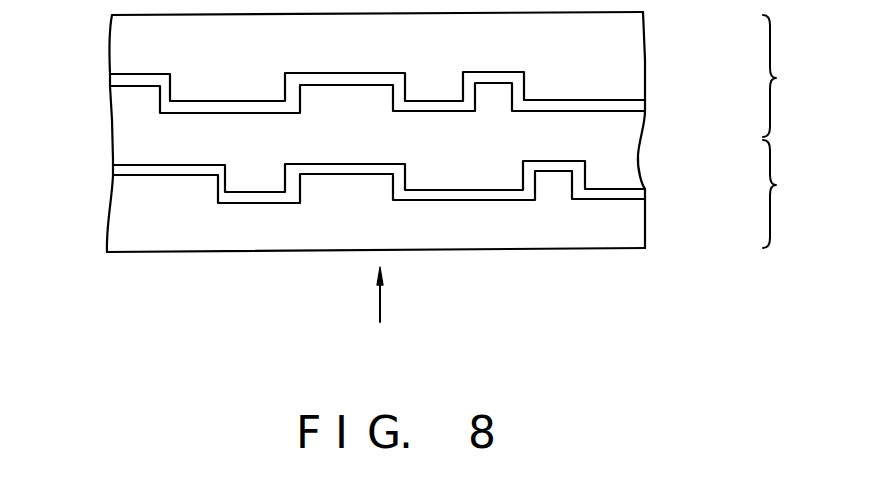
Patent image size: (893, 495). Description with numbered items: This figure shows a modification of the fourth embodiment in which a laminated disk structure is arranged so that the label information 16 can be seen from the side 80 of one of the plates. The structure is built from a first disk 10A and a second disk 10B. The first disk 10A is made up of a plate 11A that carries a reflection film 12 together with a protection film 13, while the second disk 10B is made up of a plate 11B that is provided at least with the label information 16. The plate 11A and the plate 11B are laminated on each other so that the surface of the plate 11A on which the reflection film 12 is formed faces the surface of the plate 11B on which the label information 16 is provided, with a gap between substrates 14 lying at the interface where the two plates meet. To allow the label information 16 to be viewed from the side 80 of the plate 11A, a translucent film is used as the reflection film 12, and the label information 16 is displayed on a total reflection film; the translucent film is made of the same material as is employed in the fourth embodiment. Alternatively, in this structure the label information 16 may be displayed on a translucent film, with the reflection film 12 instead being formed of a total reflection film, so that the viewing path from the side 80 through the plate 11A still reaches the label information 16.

The plate 11B is at (638, 42).
The label information 16 is at (636, 104).
The protection film 13 is at (642, 142).
The gap between substrates (alternate element) 14 is at (641, 150).
The reflection film 12 is at (638, 194).
The plate 11A is at (645, 238).
The second disk 10B is at (797, 76).
The first disk 10A is at (797, 194).
The side 80 is at (401, 294).